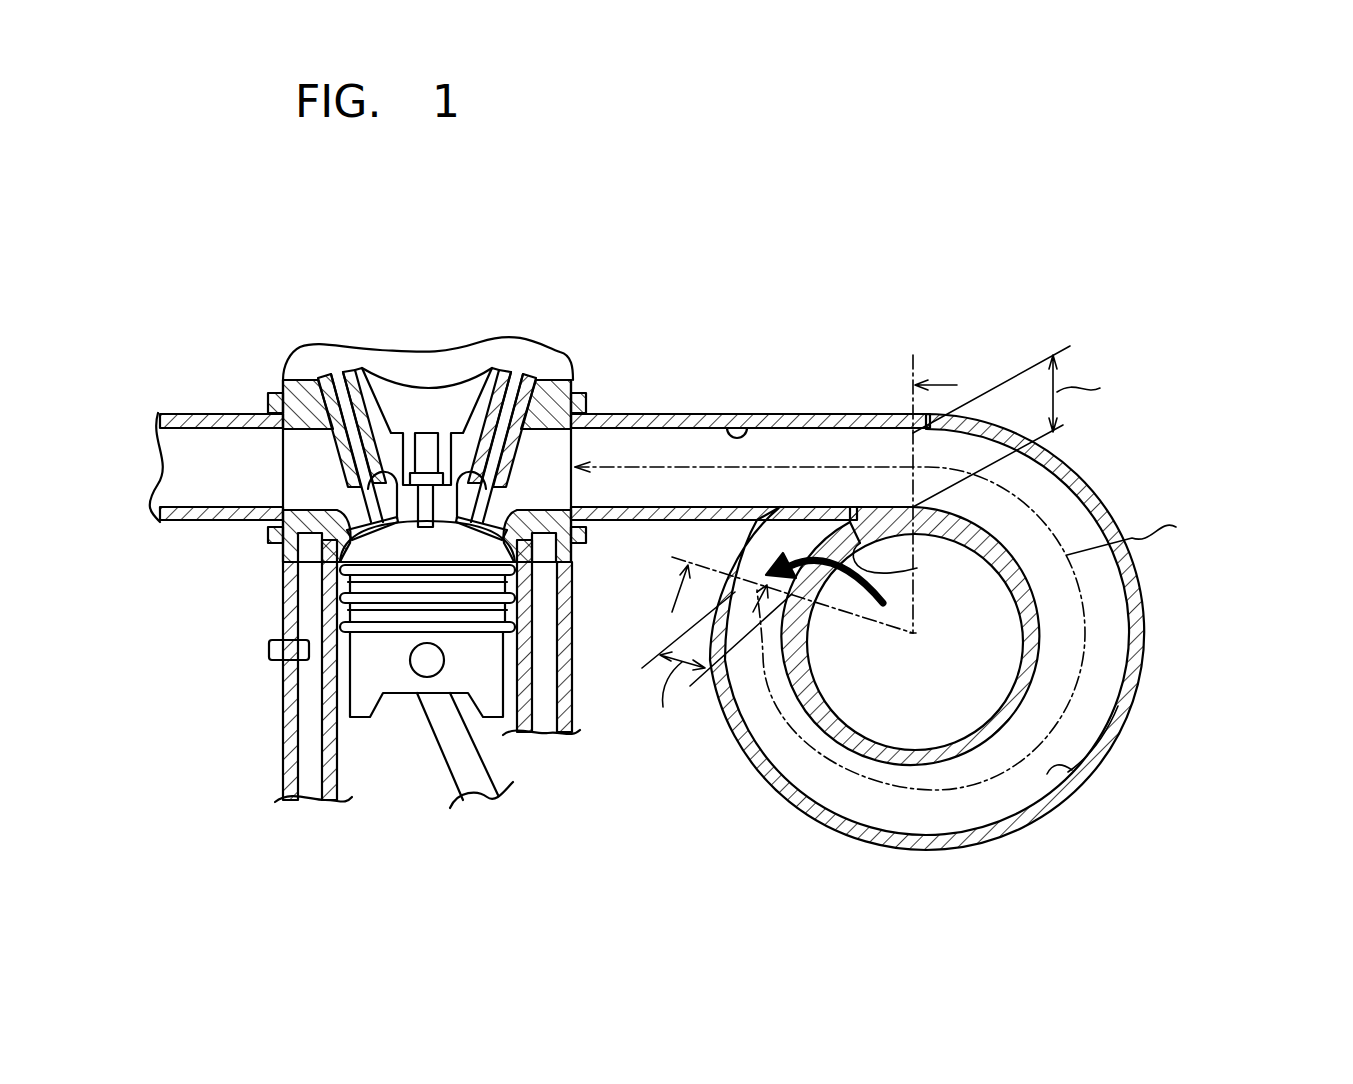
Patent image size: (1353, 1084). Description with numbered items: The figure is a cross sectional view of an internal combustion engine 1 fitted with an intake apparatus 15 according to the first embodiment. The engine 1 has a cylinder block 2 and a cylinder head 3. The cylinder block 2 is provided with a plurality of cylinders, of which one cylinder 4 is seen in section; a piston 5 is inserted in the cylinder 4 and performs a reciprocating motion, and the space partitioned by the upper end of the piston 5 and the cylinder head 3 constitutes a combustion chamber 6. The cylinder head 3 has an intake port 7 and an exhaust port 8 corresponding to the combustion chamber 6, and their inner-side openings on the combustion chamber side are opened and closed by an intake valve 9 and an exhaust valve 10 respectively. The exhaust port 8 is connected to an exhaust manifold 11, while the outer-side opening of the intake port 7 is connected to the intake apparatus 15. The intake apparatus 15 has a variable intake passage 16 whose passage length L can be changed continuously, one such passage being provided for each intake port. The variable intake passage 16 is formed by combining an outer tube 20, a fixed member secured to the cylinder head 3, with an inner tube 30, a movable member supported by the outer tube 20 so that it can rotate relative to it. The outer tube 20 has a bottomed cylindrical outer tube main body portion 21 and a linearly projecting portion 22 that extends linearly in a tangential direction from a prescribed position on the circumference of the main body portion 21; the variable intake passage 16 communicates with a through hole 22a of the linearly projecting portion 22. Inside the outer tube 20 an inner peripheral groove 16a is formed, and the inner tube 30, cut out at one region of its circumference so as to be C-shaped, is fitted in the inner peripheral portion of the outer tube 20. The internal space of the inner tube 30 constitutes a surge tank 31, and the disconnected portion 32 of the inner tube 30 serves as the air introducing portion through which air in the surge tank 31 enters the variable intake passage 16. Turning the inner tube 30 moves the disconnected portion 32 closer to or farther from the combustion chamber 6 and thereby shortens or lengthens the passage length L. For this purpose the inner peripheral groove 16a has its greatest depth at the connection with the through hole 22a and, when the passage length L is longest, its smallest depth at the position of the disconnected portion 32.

The engine 1 is at (281, 325).
The cylinder block 2 is at (283, 730).
The cylinder head 3 is at (437, 362).
The cylinder 4 is at (340, 748).
The piston 5 is at (355, 674).
The combustion chamber 6 is at (370, 549).
The intake port 7 is at (543, 457).
The exhaust port 8 is at (297, 460).
The intake valve 9 is at (530, 373).
The exhaust valve 10 is at (330, 372).
The exhaust manifold 11 is at (197, 415).
The intake apparatus 15 is at (1144, 482).
The variable intake passage 16 is at (947, 817).
The inner peripheral groove 16a is at (1048, 773).
The outer tube 20 is at (1152, 622).
The outer tube main body portion 21 is at (1117, 707).
The linearly projecting portion 22 is at (793, 412).
The through hole 22a is at (717, 413).
The inner tube 30 is at (899, 752).
The surge tank 31 is at (960, 628).
The disconnected portion 32 is at (913, 571).